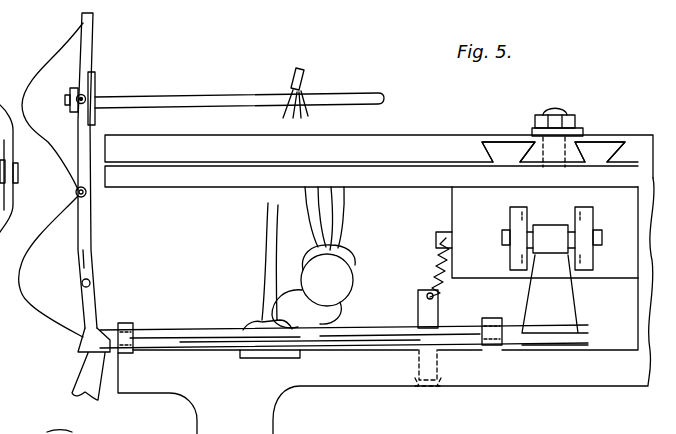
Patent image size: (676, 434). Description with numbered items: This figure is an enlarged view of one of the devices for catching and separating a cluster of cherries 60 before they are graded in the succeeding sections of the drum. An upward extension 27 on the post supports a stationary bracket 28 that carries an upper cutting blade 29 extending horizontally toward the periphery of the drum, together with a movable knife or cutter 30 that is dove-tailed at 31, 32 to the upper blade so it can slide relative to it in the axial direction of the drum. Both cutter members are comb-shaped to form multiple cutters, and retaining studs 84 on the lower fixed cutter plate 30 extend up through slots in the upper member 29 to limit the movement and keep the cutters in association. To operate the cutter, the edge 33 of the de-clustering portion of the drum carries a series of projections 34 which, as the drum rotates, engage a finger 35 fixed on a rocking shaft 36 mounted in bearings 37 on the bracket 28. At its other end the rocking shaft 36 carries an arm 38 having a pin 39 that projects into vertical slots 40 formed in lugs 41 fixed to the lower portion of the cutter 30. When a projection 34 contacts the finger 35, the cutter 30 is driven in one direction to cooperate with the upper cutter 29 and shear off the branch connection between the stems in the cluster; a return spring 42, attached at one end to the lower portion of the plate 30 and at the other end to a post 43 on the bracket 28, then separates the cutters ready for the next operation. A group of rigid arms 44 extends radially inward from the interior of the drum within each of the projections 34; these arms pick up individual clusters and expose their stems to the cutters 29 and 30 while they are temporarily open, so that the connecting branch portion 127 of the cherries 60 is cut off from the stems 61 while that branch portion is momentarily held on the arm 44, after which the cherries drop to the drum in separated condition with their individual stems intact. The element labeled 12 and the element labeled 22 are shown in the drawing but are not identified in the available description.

The frame 12 is at (50, 60).
The bar 22 is at (101, 39).
The projections 34 is at (86, 100).
The rigid arms 44 is at (328, 98).
The connecting branch portion 127 is at (292, 78).
The upper cutting blade 29 is at (397, 140).
The dove-tail 31 is at (504, 150).
The dove-tail 32 is at (595, 146).
The retaining studs 84 is at (550, 108).
The movable knife or cutter 30 is at (193, 178).
The stationary bracket 28 is at (604, 368).
The upward extension 27 is at (276, 408).
The stems 61 is at (335, 222).
The cherries 60 is at (356, 296).
The rocking shaft 36 is at (192, 336).
The bearings 37 is at (128, 325).
The finger 35 is at (96, 330).
The edge 33 is at (84, 260).
The return spring 42 is at (426, 262).
The post 43 is at (422, 315).
The pin 39 is at (506, 238).
The lugs 41 is at (519, 262).
The vertical slots 40 is at (515, 212).
The arm 38 is at (555, 300).